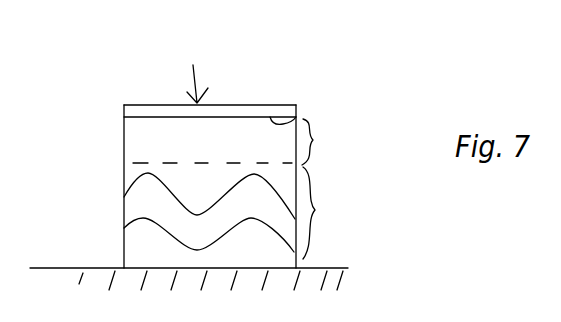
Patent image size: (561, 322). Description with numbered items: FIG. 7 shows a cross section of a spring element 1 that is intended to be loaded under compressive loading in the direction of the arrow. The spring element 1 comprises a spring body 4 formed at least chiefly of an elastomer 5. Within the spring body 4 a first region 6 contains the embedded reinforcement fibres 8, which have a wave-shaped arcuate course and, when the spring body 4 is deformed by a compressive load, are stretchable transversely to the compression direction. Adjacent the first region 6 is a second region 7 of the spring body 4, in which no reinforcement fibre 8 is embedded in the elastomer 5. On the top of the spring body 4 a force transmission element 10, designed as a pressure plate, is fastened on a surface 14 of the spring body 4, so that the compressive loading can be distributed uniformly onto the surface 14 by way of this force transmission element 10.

The spring element 1 is at (143, 78).
The spring body 4 is at (88, 123).
The elastomer 5 is at (203, 185).
The first region 6 is at (316, 213).
The second region 7 is at (317, 142).
The reinforcement fibre 8 is at (123, 225).
The force transmission element 10 is at (274, 103).
The surface 14 is at (300, 117).